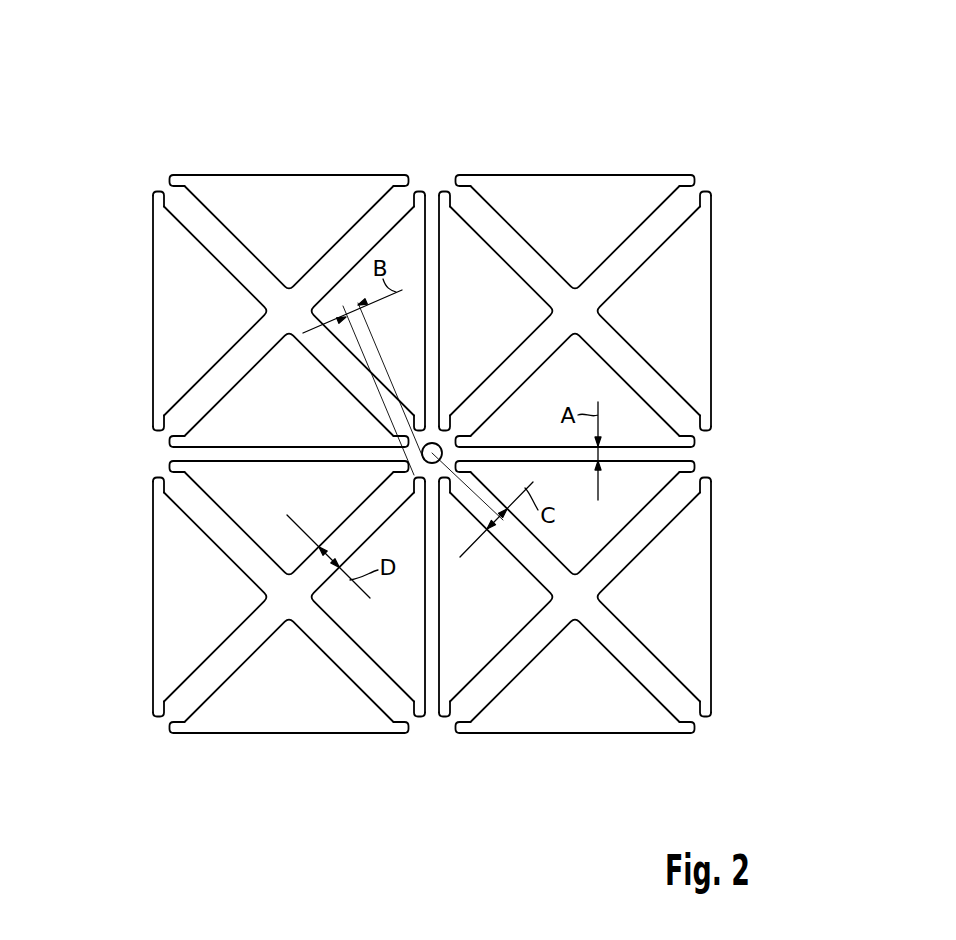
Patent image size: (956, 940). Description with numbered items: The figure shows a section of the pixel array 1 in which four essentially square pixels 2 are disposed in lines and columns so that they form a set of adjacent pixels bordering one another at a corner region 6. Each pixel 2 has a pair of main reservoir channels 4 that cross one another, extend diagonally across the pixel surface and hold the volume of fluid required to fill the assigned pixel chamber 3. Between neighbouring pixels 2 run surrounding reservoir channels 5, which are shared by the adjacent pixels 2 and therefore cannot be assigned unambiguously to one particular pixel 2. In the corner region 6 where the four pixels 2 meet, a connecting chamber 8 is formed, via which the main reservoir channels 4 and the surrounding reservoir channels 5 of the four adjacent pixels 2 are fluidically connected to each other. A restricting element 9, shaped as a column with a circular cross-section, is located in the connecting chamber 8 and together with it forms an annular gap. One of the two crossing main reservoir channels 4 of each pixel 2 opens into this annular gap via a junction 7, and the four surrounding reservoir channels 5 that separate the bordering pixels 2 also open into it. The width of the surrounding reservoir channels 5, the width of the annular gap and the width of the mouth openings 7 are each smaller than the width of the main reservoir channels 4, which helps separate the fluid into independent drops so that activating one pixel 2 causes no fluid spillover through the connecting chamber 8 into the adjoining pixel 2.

The pixel array 1 is at (551, 71).
The pixel 2 is at (712, 571).
The pixel chamber 3 is at (432, 454).
The main reservoir channel 4 is at (432, 454).
The surrounding reservoir channel 5 is at (432, 455).
The corner region 6 is at (449, 406).
The junction 7 is at (432, 454).
The connecting chamber 8 is at (419, 454).
The restricting element 9 is at (448, 482).